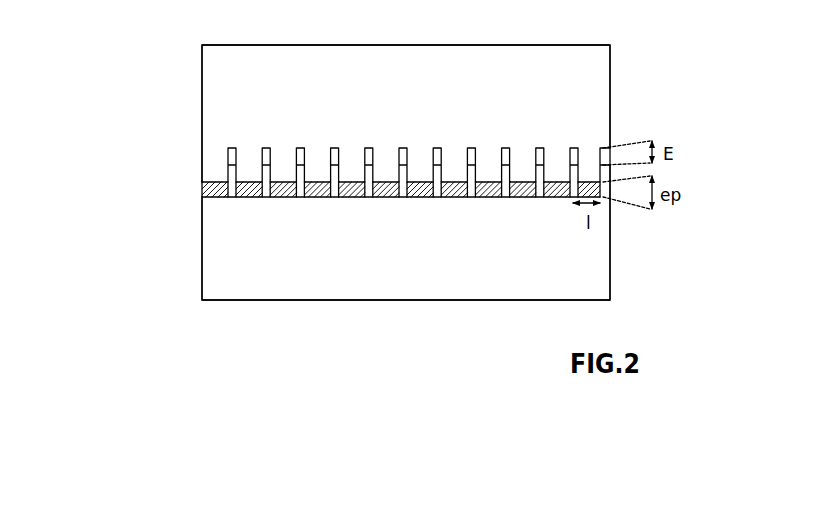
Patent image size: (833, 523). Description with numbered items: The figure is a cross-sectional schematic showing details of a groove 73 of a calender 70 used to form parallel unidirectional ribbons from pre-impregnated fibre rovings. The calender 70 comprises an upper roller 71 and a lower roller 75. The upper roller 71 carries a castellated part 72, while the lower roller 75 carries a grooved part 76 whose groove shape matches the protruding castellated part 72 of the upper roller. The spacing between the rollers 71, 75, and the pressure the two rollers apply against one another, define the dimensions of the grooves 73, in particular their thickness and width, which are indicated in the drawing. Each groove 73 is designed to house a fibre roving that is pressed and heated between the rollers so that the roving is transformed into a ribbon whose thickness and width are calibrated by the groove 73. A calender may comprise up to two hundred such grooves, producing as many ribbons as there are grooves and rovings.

The calender 70 is at (773, 33).
The upper roller 71 is at (603, 78).
The castellated part 72 is at (248, 160).
The groove 73 is at (238, 188).
The lower roller 75 is at (607, 252).
The grooved part 76 is at (280, 198).